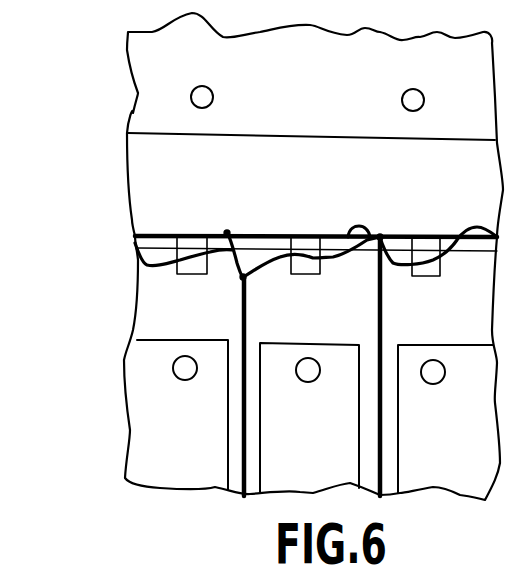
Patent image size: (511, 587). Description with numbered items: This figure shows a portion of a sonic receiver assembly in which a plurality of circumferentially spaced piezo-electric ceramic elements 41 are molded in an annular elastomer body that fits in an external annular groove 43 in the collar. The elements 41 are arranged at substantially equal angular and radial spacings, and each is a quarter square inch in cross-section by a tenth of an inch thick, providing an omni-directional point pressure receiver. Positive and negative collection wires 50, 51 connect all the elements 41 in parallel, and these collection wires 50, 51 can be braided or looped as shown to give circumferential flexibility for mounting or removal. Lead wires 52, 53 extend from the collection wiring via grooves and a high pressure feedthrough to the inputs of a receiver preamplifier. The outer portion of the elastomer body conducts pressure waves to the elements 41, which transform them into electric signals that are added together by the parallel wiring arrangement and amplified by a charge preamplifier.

The external annular groove 43 is at (147, 172).
The piezo-electric ceramic element 41 is at (185, 237).
The positive collection wire 50 is at (402, 237).
The negative collection wire 51 is at (358, 228).
The lead wire 53 is at (246, 413).
The lead wire 52 is at (382, 428).